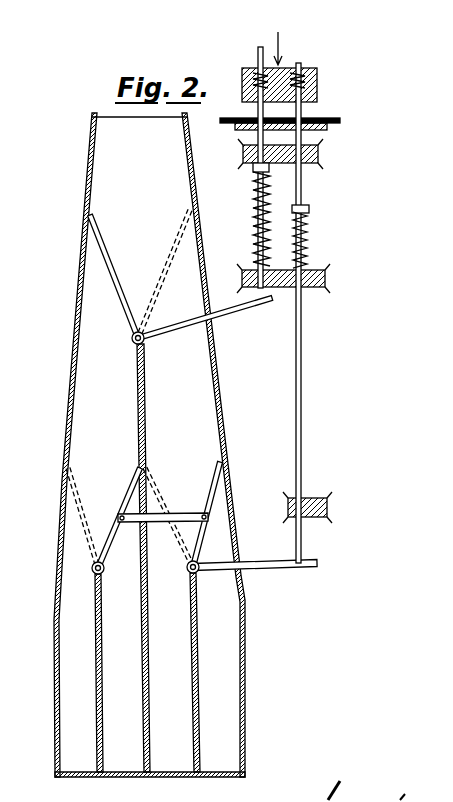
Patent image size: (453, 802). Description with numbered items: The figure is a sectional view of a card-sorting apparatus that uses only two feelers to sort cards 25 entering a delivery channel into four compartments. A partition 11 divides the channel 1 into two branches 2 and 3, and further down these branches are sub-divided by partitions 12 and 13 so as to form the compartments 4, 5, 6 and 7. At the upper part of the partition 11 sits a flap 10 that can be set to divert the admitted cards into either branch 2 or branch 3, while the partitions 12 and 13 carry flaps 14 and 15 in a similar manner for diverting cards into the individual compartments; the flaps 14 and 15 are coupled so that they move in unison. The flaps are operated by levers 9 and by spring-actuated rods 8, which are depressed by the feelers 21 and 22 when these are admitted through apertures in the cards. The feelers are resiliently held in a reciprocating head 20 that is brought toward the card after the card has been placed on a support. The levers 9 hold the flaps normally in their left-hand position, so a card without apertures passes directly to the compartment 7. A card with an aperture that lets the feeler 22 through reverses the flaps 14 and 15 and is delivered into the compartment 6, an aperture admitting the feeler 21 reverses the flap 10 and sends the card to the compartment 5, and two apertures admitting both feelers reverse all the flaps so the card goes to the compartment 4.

The channel 1 is at (149, 445).
The branch 2 is at (99, 377).
The branch 3 is at (175, 377).
The compartment 4 is at (79, 741).
The compartment 5 is at (127, 741).
The compartment 6 is at (174, 741).
The compartment 7 is at (219, 739).
The spring-actuated rod 8 is at (305, 233).
The lever 9 is at (224, 313).
The flap 10 is at (105, 258).
The partition 11 is at (142, 388).
The partition 12 is at (103, 622).
The partition 13 is at (199, 622).
The flap 14 is at (130, 492).
The flap 15 is at (217, 483).
The reciprocating head 20 is at (318, 90).
The feeler 21 is at (256, 52).
The feeler 22 is at (300, 62).
The card 25 is at (340, 120).